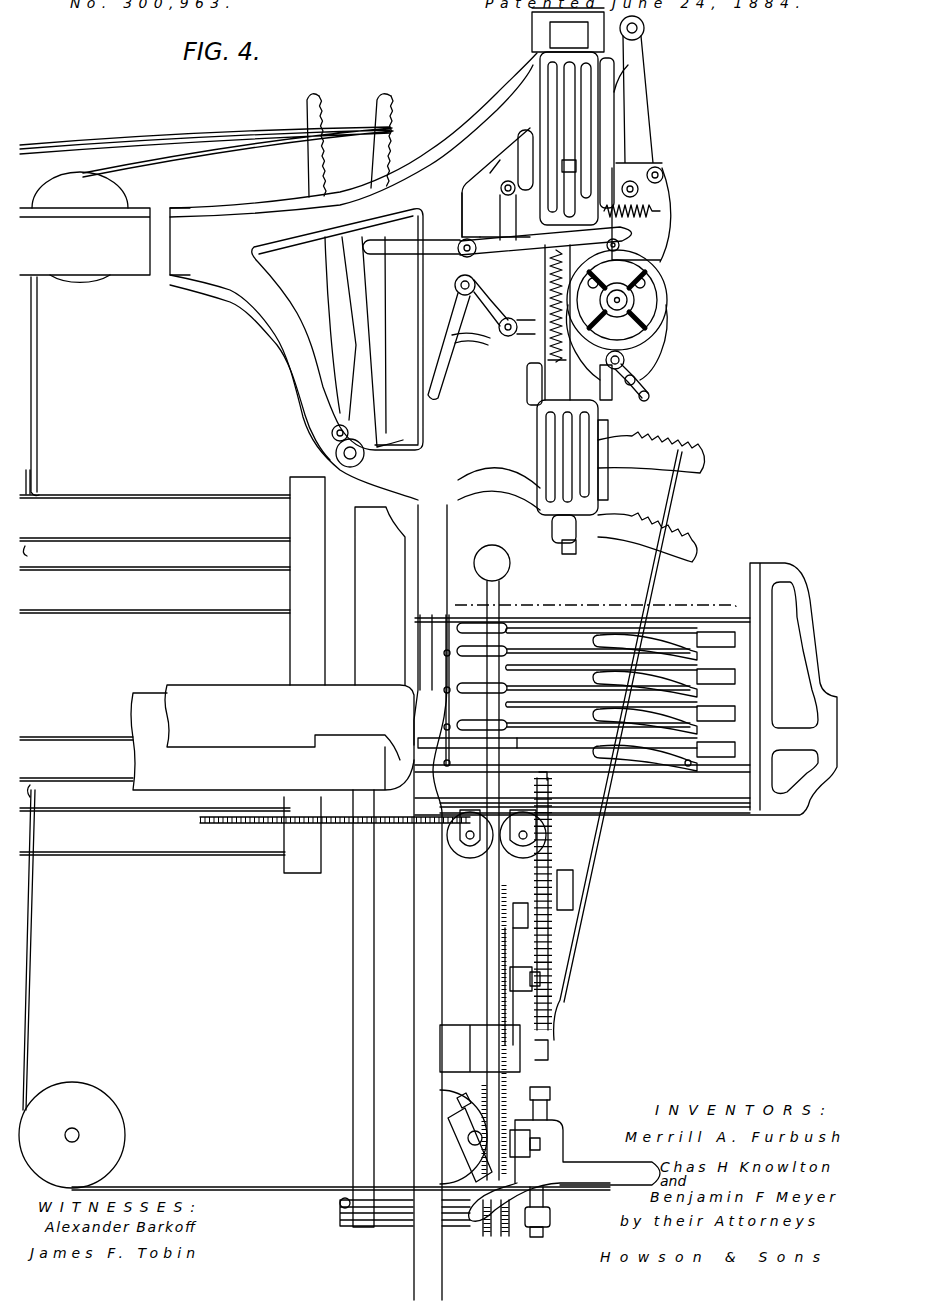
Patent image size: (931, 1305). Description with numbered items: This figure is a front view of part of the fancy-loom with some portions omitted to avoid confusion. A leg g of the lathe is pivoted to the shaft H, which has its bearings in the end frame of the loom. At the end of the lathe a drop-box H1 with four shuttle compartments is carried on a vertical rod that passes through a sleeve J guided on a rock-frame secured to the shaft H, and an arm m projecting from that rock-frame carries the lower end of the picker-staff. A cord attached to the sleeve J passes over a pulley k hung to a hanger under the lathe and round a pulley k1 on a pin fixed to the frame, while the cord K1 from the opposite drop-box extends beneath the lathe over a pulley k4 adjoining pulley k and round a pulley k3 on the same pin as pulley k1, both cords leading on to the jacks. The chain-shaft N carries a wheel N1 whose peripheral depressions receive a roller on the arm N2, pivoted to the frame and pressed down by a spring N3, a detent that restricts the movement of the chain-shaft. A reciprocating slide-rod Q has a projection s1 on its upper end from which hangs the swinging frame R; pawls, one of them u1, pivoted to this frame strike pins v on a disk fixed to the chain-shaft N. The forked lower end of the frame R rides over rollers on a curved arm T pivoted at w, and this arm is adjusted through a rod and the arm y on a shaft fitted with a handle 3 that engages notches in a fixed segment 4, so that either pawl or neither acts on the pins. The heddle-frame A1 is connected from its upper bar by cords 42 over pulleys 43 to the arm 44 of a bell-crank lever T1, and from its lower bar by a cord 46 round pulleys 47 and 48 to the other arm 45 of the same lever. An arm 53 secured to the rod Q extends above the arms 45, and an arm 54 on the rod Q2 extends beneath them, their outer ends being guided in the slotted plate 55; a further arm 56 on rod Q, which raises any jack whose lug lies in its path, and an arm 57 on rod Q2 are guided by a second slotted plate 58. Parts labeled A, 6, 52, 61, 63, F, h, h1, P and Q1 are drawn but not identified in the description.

The main frame A is at (278, 676).
The heddle-frame A1 is at (212, 662).
The cords 42 is at (206, 310).
The pulleys 43 is at (85, 227).
The arm 44 is at (372, 287).
The arm 45 is at (499, 489).
The cord 46 is at (353, 820).
The pulley 47 is at (72, 1135).
The pulley 48 is at (466, 1137).
The pivot pin 52 is at (512, 215).
The arm 53 is at (567, 457).
The arm 54 is at (556, 457).
The slotted plate 55 is at (600, 443).
The arm 56 is at (572, 139).
The arm 57 is at (563, 163).
The slotted plate 58 is at (542, 100).
The bracket 61 is at (525, 267).
The link 63 is at (498, 291).
The handle 3 is at (449, 346).
The fixed segment 4 is at (471, 346).
The spring 6 is at (557, 322).
The hand lever F is at (489, 896).
The legs g is at (371, 1008).
The shaft H is at (340, 1210).
The drop-box H1 is at (626, 689).
The sleeve J is at (545, 1195).
The cord or chain K1 is at (319, 835).
The pulley k is at (546, 838).
The pulley k1 is at (512, 1229).
The pulley k3 is at (482, 1229).
The pulley k4 is at (469, 837).
The slide h is at (494, 987).
The threaded rod h1 is at (573, 906).
The arm m is at (564, 1170).
The chain-shaft N is at (635, 302).
The wheel N1 is at (655, 290).
The arm N2 is at (497, 240).
The spring N3 is at (569, 345).
The pawl chain P is at (624, 382).
The slide-rod Q is at (590, 545).
The pivot Q1 is at (523, 323).
The rod Q2 is at (556, 26).
The swinging frame R is at (639, 89).
The projection s1 is at (616, 69).
The curved arm T is at (660, 333).
The bell-crank lever T1 is at (369, 437).
The pawl u1 is at (672, 211).
The pins v is at (641, 208).
The pivot w is at (615, 354).
The arm y is at (458, 280).